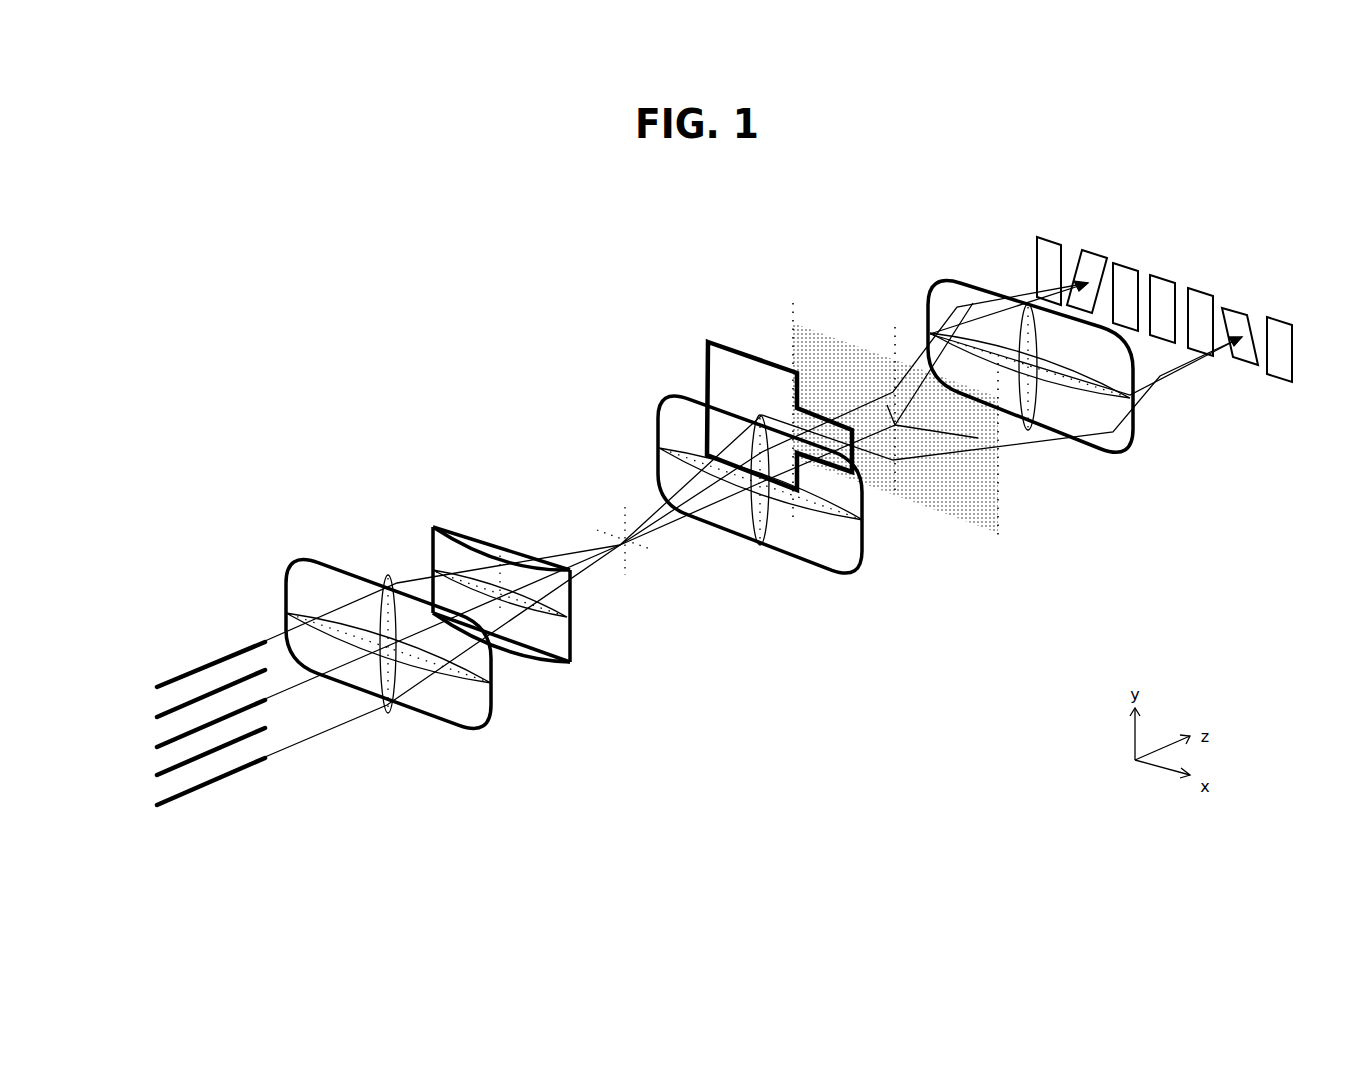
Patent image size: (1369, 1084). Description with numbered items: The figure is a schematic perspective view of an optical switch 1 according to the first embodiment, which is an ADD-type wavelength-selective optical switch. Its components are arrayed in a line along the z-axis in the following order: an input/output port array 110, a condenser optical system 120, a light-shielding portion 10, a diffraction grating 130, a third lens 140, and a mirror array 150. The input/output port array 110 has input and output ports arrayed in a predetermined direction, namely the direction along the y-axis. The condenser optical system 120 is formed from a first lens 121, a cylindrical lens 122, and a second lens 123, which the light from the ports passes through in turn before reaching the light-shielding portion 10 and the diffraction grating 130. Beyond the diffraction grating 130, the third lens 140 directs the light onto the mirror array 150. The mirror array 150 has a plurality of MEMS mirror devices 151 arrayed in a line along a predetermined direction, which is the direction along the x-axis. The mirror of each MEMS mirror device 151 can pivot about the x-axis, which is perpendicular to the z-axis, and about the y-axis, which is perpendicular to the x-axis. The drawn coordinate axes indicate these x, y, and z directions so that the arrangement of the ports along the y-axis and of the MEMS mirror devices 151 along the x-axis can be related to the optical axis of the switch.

The optical switch 1 is at (300, 212).
The light-shielding portion 10 is at (708, 340).
The input/output port array 110 is at (143, 673).
The condenser optical system 120 is at (559, 525).
The first lens 121 is at (310, 558).
The cylindrical lens 122 is at (433, 526).
The second lens 123 is at (745, 463).
The diffraction grating 130 is at (840, 336).
The third lens 140 is at (957, 278).
The mirror array 150 is at (1172, 316).
The MEMS mirror device 151 is at (1279, 370).